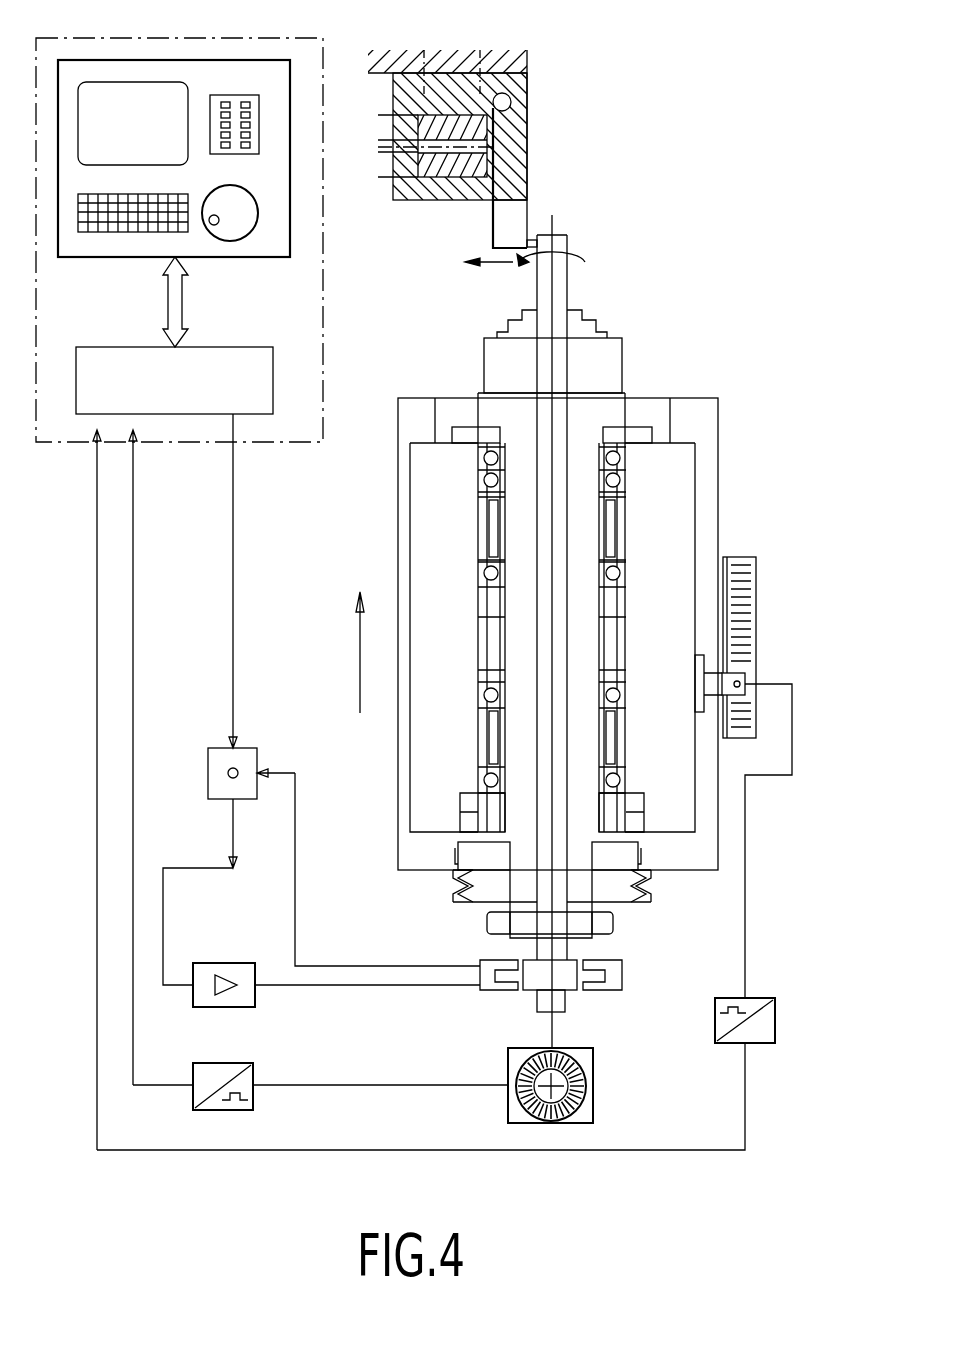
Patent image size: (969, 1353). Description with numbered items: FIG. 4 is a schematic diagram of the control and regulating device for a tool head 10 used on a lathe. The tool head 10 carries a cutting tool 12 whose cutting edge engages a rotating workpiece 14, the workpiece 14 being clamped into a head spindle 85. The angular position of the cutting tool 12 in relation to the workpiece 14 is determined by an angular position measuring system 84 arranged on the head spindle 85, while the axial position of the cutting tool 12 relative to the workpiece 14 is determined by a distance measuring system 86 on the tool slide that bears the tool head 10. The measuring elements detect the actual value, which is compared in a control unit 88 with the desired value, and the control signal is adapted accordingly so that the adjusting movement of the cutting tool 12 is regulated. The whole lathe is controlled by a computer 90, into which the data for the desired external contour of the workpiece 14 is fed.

The tool head 10 is at (497, 83).
The cutting tool 12 is at (515, 220).
The workpiece 14 is at (557, 295).
The angular position measuring system 84 is at (587, 1105).
The head spindle 85 is at (568, 775).
The distance measuring system 86 is at (745, 630).
The control unit 88 is at (210, 778).
The computer 90 is at (303, 58).